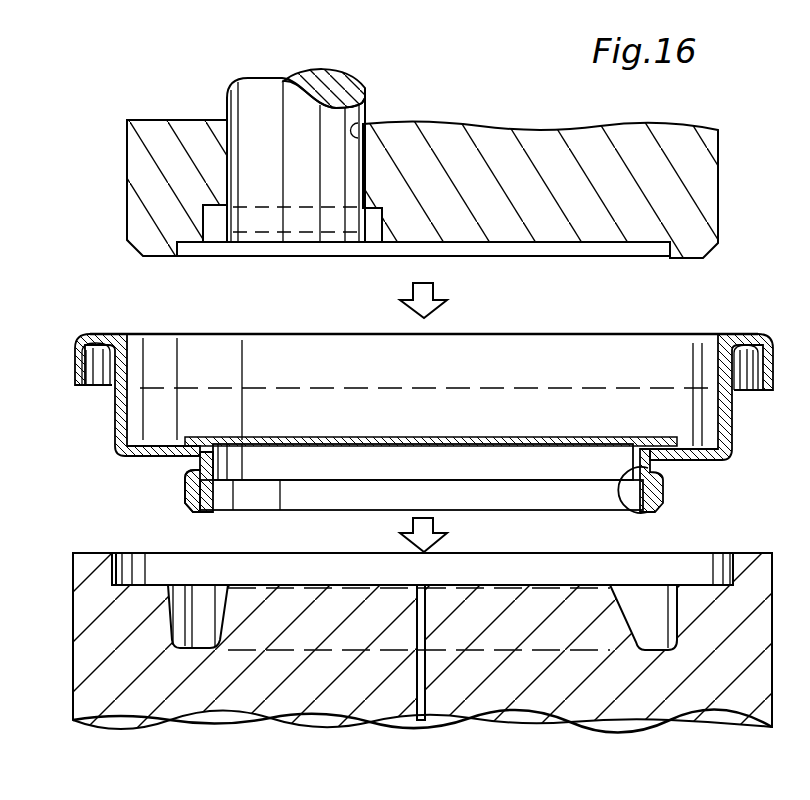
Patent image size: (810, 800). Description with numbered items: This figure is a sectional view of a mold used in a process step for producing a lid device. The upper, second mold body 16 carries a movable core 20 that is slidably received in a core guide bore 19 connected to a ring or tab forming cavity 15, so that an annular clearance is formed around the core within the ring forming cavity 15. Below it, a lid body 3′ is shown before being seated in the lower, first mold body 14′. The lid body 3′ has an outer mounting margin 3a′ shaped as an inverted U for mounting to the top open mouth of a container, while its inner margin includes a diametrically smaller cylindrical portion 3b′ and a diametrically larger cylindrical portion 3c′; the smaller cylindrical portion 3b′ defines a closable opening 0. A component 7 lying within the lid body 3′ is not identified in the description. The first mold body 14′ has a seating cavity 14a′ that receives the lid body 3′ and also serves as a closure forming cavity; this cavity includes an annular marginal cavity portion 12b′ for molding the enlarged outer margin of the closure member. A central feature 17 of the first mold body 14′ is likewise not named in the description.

The movable core 20 is at (265, 98).
The core guide bore 19 is at (366, 110).
The second mold body 16 is at (145, 175).
The ring or tab forming cavity 15 is at (218, 230).
The outer mounting margin 3a′ is at (97, 332).
The sealing ring 7 is at (303, 436).
The lid body 3′ is at (106, 428).
The diametrically smaller cylindrical portion 3b′ is at (200, 454).
The diametrically larger cylindrical portion 3c′ is at (184, 490).
The closable opening 0 is at (638, 512).
The seating cavity 14a′ is at (713, 558).
The first mold body 14′ is at (93, 663).
The annular marginal cavity portion 12b′ is at (198, 640).
The slit 17 is at (425, 727).